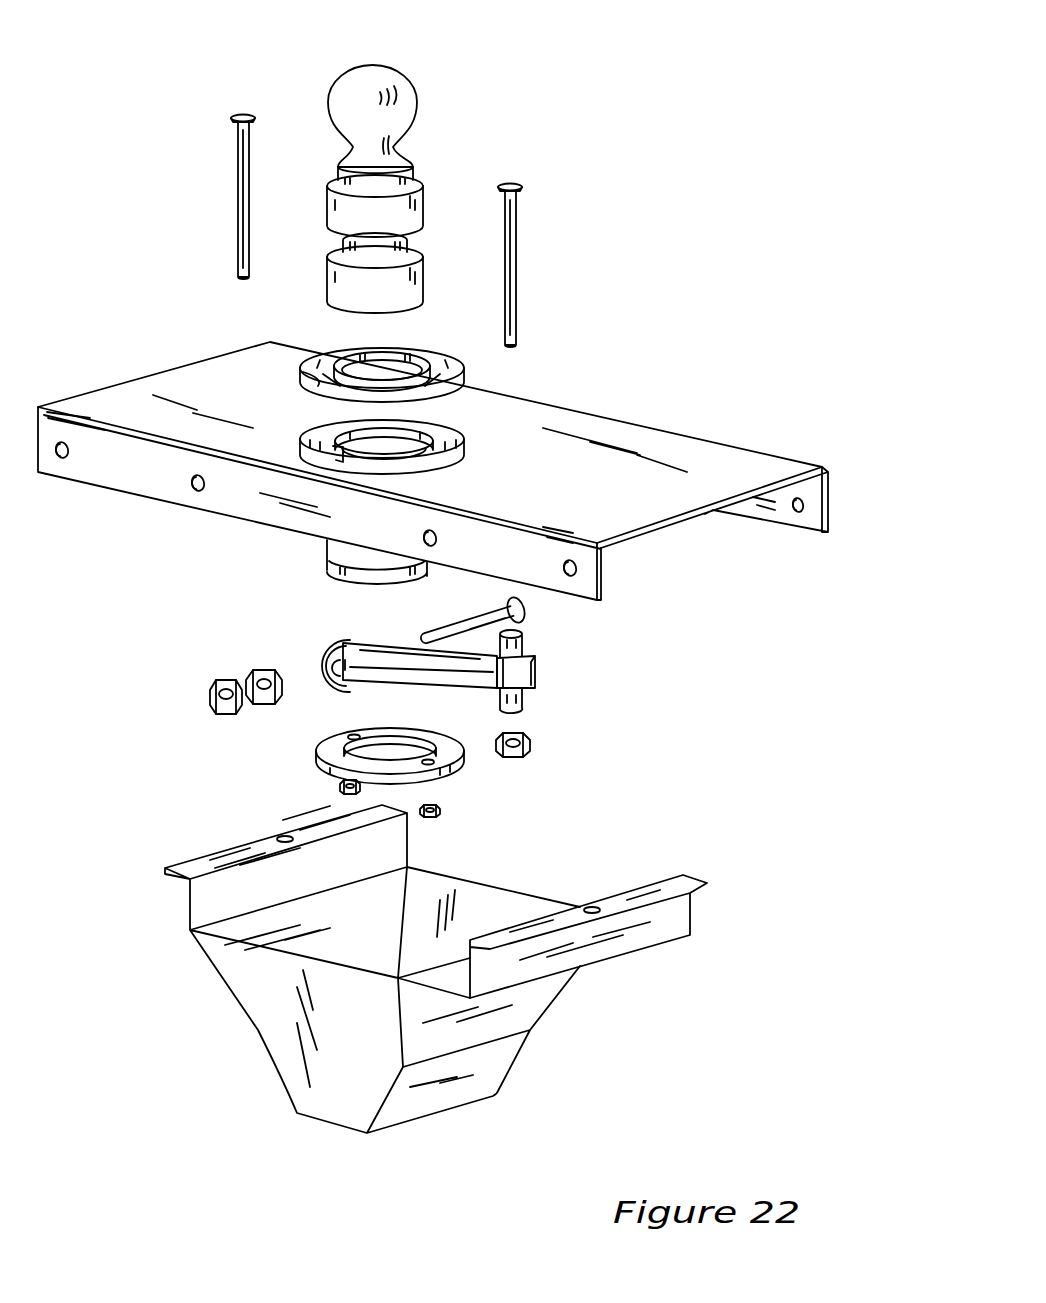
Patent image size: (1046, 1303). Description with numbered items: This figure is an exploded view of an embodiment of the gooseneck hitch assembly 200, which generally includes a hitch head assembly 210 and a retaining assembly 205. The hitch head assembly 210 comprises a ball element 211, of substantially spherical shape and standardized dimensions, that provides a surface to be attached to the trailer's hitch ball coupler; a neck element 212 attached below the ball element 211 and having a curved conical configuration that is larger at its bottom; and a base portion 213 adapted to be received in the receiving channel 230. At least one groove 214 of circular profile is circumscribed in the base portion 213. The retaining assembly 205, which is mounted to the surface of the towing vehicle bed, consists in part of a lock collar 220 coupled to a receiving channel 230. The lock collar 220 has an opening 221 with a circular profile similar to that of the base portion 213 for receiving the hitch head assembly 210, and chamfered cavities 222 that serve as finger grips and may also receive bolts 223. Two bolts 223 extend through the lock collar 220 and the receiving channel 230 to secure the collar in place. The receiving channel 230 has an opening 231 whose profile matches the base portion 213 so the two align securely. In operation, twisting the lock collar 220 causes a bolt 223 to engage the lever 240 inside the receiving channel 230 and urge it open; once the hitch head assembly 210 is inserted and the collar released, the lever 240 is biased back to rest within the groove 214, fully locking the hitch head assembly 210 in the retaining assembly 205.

The gooseneck hitch assembly 200 is at (433, 579).
The retaining assembly 205 is at (487, 382).
The hitch head assembly 210 is at (417, 169).
The ball element 211 is at (398, 70).
The neck element 212 is at (348, 145).
The base portion 213 is at (413, 210).
The groove 214 is at (403, 238).
The lock collar 220 is at (433, 449).
The opening 221 is at (380, 374).
The cavity 222 is at (317, 387).
The bolt 223 is at (240, 233).
The receiving channel 230 is at (327, 553).
The opening 231 is at (397, 457).
The lever 240 is at (371, 638).